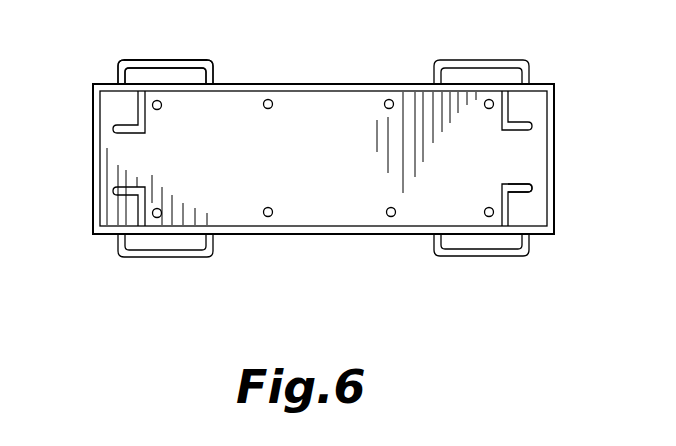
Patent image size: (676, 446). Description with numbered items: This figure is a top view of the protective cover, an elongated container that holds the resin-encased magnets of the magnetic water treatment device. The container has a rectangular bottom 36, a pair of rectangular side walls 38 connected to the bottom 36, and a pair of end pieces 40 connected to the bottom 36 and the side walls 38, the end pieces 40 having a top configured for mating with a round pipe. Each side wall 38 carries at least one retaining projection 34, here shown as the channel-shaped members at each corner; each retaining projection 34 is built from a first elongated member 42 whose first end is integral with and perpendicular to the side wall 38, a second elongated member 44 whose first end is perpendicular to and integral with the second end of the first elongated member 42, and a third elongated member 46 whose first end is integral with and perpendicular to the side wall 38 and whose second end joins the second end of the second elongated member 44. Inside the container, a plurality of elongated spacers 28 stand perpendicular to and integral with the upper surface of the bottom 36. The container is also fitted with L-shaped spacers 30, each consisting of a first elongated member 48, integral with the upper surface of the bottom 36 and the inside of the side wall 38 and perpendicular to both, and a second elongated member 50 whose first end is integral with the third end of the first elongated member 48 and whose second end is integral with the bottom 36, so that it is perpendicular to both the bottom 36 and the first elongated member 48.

The elongated spacers 28 is at (389, 207).
The L-shaped spacer 30 is at (113, 130).
The retaining projection 34 is at (475, 59).
The rectangular bottom 36 is at (230, 168).
The rectangular side walls 38 is at (364, 84).
The end pieces 40 is at (93, 107).
The first elongated member 42 is at (117, 75).
The second elongated member 44 is at (165, 60).
The third elongated member 46 is at (224, 70).
The first elongated member 48 is at (502, 200).
The second elongated member 50 is at (520, 184).